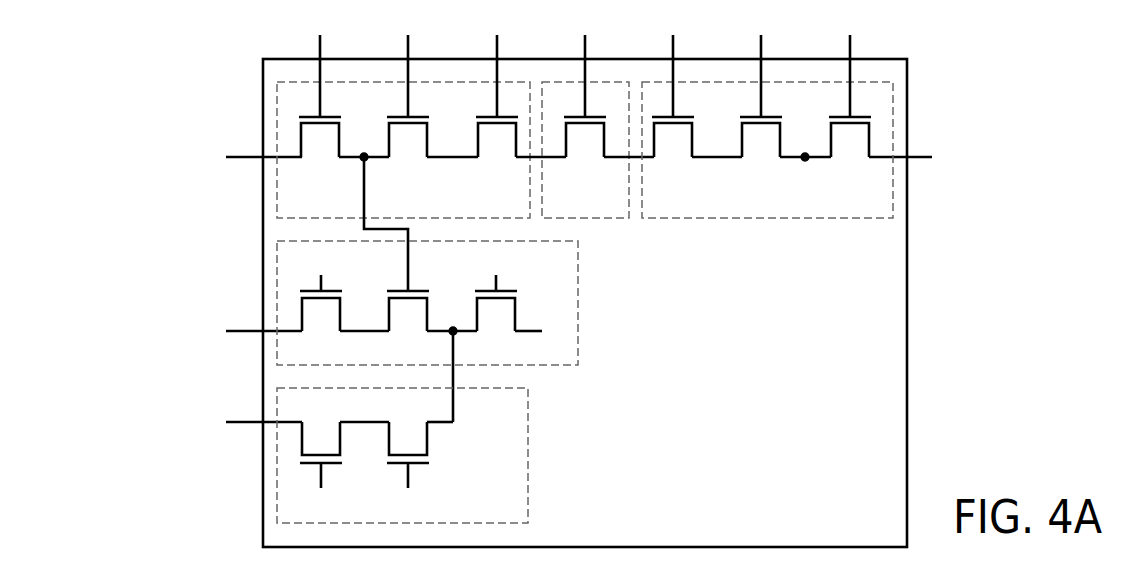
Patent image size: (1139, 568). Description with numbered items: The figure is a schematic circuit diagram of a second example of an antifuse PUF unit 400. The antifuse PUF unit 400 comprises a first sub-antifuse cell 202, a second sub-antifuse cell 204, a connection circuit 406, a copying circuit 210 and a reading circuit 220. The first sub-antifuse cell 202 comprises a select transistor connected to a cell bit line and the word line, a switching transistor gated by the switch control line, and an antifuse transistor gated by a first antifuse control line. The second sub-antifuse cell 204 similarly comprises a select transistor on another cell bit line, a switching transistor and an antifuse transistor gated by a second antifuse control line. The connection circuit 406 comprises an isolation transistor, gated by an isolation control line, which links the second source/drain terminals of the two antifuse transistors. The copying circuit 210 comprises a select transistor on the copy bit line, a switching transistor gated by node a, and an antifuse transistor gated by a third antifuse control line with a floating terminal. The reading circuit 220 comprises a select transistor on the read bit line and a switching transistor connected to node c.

The antifuse PUF unit 400 is at (833, 533).
The first sub-antifuse cell 202 is at (481, 210).
The connection circuit 406 is at (564, 210).
The second sub-antifuse cell 204 is at (658, 210).
The copying circuit 210 is at (531, 272).
The reading circuit 220 is at (482, 513).